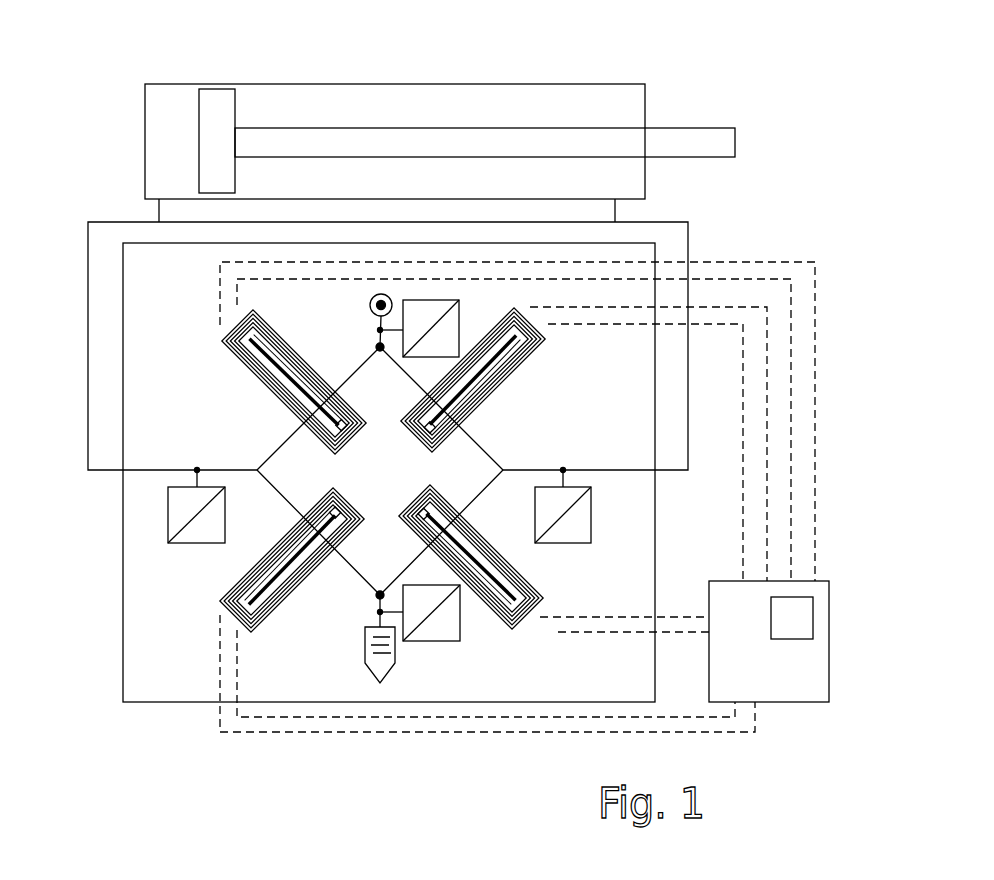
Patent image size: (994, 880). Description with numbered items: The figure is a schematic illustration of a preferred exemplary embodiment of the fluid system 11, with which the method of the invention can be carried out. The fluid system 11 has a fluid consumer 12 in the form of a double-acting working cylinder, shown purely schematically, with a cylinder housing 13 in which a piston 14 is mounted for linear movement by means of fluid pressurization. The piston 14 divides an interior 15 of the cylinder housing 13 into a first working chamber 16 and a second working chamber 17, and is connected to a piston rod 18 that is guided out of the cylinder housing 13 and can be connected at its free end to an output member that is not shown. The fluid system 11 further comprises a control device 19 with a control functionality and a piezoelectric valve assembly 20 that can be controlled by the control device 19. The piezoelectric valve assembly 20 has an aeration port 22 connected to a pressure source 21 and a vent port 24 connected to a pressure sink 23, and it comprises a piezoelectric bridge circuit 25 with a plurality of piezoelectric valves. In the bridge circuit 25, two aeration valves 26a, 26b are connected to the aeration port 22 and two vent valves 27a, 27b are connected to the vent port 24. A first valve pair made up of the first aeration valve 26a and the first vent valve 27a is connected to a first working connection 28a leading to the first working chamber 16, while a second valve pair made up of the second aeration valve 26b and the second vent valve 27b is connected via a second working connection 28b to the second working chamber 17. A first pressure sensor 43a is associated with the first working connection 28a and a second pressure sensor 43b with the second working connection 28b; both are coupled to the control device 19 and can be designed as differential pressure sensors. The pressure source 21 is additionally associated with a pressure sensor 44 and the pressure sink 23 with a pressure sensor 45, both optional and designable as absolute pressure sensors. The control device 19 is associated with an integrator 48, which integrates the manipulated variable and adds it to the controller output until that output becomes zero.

The fluid system 11 is at (616, 66).
The fluid consumer 12 is at (239, 74).
The cylinder housing 13 is at (152, 82).
The piston 14 is at (221, 112).
The interior 15 is at (487, 104).
The first working chamber 16 is at (165, 137).
The second working chamber 17 is at (620, 177).
The piston rod 18 is at (693, 140).
The control device 19 is at (795, 682).
The piezoelectric valve assembly 20 is at (195, 563).
The pressure source 21 is at (382, 293).
The aeration port 22 is at (358, 368).
The pressure sink 23 is at (389, 672).
The vent port 24 is at (345, 563).
The piezoelectric bridge circuit 25 is at (380, 469).
The first aeration valve 26a is at (238, 364).
The second aeration valve 26b is at (514, 388).
The first vent valve 27a is at (223, 588).
The second vent valve 27b is at (542, 583).
The first working connection 28a is at (147, 472).
The second working connection 28b is at (622, 472).
The first pressure sensor 43a is at (172, 520).
The second pressure sensor 43b is at (590, 503).
The pressure sensor 44 is at (456, 320).
The pressure sensor 45 is at (462, 628).
The integrator 48 is at (802, 623).